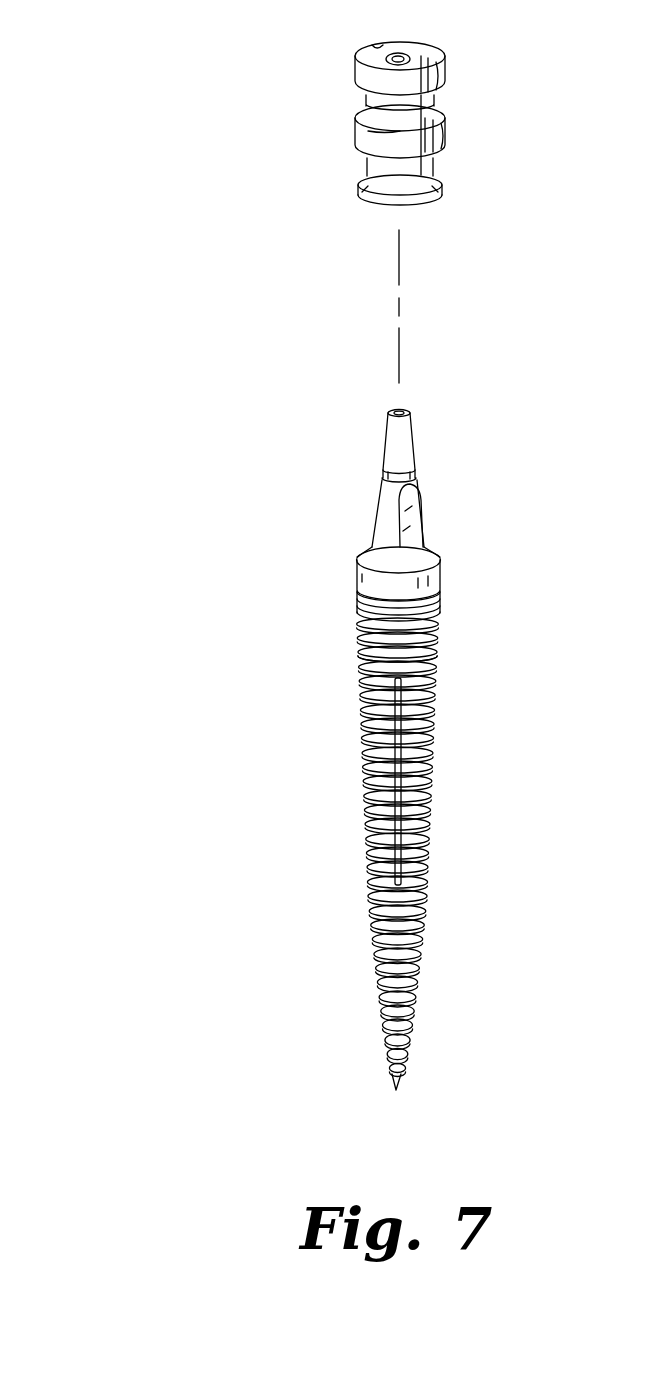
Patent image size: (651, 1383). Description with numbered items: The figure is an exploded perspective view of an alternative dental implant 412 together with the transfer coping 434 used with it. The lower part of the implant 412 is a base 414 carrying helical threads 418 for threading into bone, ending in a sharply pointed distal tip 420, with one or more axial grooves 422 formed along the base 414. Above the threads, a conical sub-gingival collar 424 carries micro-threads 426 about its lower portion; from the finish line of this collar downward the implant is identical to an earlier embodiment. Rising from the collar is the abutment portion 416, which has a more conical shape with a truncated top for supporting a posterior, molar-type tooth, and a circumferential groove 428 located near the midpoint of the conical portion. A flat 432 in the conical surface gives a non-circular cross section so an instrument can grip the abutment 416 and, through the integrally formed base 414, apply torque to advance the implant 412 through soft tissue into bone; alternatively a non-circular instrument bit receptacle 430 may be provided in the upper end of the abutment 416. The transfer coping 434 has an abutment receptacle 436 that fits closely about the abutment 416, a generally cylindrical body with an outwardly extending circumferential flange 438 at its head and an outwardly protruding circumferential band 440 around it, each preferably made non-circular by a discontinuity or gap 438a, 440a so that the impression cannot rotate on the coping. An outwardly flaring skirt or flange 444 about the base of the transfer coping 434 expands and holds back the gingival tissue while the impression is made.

The implant 412 is at (158, 752).
The base 414 is at (432, 737).
The abutment portion 416 is at (377, 505).
The helical threads 418 is at (440, 660).
The distal tip 420 is at (398, 1082).
The axial grooves 422 is at (432, 813).
The sub-gingival collar 424 is at (440, 552).
The micro-threads 426 is at (440, 590).
The circumferential groove 428 is at (382, 477).
The instrument bit receptacle 430 is at (405, 411).
The flat 432 is at (418, 497).
The transfer coping 434 is at (360, 161).
The abutment receptacle 436 is at (437, 163).
The circumferential flange 438 is at (355, 53).
The discontinuity or gap 438a is at (428, 50).
The circumferential band 440 is at (445, 103).
The discontinuity or gap 440a is at (447, 122).
The skirt or flange 444 is at (420, 204).